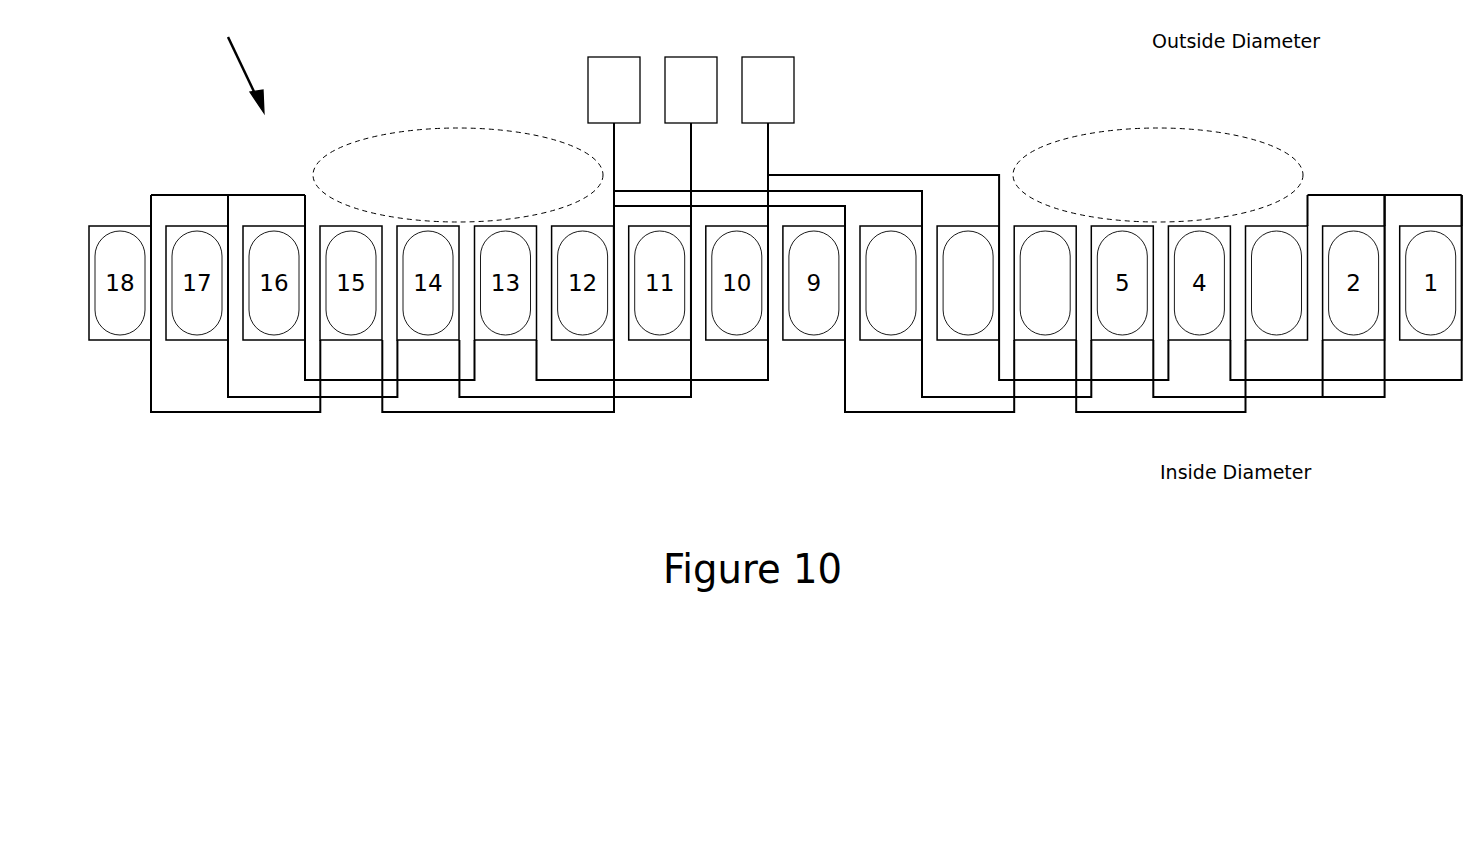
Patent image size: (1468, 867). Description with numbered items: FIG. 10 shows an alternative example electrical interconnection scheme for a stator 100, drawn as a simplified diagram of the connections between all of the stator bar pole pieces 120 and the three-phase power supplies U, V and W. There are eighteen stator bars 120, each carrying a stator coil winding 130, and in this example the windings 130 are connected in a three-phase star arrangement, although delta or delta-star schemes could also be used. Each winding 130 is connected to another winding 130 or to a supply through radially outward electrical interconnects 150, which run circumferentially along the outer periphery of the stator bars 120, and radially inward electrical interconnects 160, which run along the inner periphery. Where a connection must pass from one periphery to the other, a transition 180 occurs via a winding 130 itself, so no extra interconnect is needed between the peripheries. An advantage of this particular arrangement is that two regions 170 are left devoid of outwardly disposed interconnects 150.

The stator 100 is at (224, 69).
The stator bar pole piece 120 is at (890, 234).
The stator coil winding 130 is at (647, 340).
The radially outward electrical interconnect 150 is at (255, 193).
The radially inward electrical interconnect 160 is at (228, 412).
The region devoid of outwardly disposed interconnects 170 is at (808, 175).
The transition 180 is at (1307, 258).